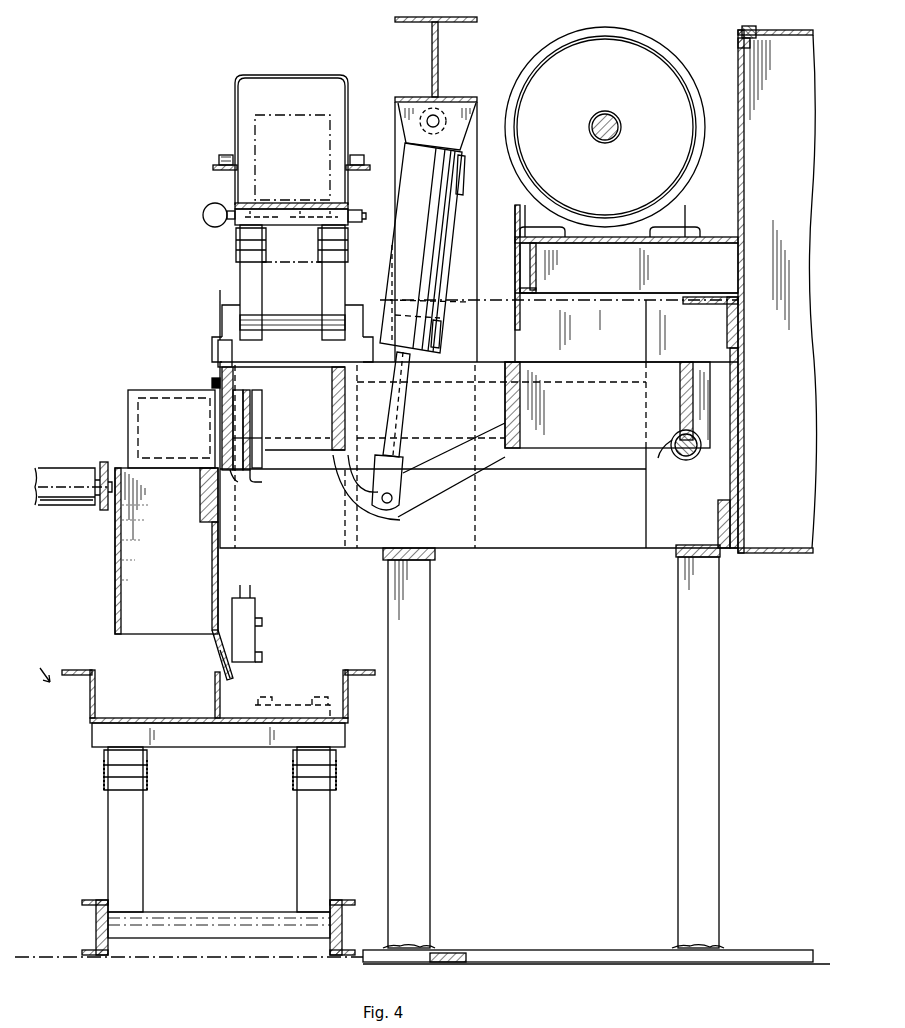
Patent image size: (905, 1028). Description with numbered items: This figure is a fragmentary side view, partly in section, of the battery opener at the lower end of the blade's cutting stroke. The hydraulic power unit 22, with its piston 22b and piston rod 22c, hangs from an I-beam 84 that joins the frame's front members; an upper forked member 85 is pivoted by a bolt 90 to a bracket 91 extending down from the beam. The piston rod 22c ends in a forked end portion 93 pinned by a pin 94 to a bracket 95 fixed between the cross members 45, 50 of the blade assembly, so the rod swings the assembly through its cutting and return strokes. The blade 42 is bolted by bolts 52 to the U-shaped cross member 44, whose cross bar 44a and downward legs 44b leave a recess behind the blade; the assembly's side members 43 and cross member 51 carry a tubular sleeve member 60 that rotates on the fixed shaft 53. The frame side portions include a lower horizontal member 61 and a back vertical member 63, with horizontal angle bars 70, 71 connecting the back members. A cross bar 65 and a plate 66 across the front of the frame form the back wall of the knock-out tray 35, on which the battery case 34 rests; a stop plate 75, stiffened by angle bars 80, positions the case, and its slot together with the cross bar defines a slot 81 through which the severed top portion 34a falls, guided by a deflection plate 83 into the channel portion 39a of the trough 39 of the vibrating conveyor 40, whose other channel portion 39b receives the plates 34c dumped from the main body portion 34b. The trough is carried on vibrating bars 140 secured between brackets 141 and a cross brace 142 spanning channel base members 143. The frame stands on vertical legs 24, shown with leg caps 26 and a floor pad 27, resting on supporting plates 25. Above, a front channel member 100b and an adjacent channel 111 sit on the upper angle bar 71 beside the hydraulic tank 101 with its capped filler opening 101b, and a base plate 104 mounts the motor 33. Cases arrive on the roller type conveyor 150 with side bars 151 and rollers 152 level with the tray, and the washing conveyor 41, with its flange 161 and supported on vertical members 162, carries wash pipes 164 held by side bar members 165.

The hydraulic power unit 22 is at (396, 290).
The piston 22b is at (480, 300).
The piston rod 22c is at (408, 392).
The vertical legs 24 is at (678, 738).
The supporting plates 25 is at (596, 937).
The leg cap 26 is at (432, 560).
The floor pad 27 is at (460, 952).
The motor 33 is at (560, 55).
The battery case 34 is at (148, 384).
The top portion 34a is at (265, 612).
The main body portion 34b is at (180, 395).
The plates 34c is at (220, 435).
The knock-out tray 35 is at (115, 550).
The trough 39 is at (90, 695).
The channel portion 39a is at (332, 688).
The channel portion 39b is at (118, 690).
The conveyor 40 is at (31, 656).
The conveyor 41 is at (232, 133).
The blade 42 is at (222, 448).
The side members 43 is at (598, 462).
The cross member 44 is at (240, 380).
The cross bar 44a is at (250, 396).
The legs 44b is at (250, 410).
The cross member 45 is at (332, 384).
The cross member 50 is at (520, 405).
The cross member 51 is at (678, 370).
The bolts 52 is at (215, 378).
The shaft 53 is at (695, 455).
The tubular sleeve member 60 is at (672, 452).
The lower horizontal member 61 is at (622, 548).
The back vertical member 63 is at (646, 323).
The cross bar 65 is at (200, 482).
The plate 66 is at (220, 560).
The angle bar 70 is at (724, 556).
The angle bar 71 is at (700, 306).
The stop plate 75 is at (256, 474).
The angle bars 80 is at (262, 421).
The slot 81 is at (238, 483).
The deflection plate 83 is at (218, 650).
The I-beam 84 is at (432, 57).
The forked member 85 is at (412, 126).
The bolt 90 is at (437, 116).
The bracket 91 is at (398, 110).
The forked end portion 93 is at (425, 503).
The pin 94 is at (395, 518).
The bracket 95 is at (458, 470).
The front channel member 100b is at (537, 270).
The tank 101 is at (740, 57).
The capped filler opening 101b is at (742, 27).
The base plate 104 is at (722, 225).
The channel 111 is at (512, 210).
The vibrating bars 140 is at (240, 263).
The bracket 141 is at (100, 752).
The cross brace 142 is at (288, 332).
The channel base members 143 is at (214, 312).
The roller type conveyor 150 is at (60, 458).
The side bars 151 is at (104, 462).
The rollers 152 is at (45, 498).
The hood flange 161 is at (226, 172).
The vertical members 162 is at (212, 350).
The wash pipes 164 is at (356, 208).
The side bar members 165 is at (210, 206).